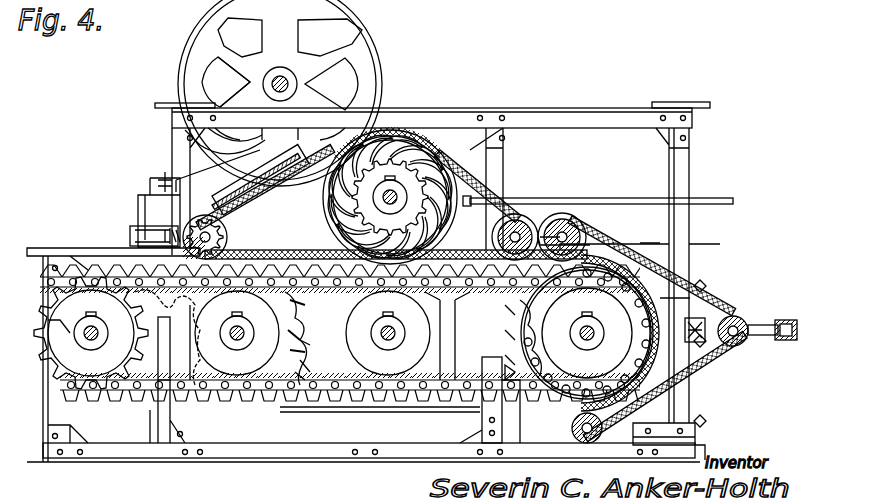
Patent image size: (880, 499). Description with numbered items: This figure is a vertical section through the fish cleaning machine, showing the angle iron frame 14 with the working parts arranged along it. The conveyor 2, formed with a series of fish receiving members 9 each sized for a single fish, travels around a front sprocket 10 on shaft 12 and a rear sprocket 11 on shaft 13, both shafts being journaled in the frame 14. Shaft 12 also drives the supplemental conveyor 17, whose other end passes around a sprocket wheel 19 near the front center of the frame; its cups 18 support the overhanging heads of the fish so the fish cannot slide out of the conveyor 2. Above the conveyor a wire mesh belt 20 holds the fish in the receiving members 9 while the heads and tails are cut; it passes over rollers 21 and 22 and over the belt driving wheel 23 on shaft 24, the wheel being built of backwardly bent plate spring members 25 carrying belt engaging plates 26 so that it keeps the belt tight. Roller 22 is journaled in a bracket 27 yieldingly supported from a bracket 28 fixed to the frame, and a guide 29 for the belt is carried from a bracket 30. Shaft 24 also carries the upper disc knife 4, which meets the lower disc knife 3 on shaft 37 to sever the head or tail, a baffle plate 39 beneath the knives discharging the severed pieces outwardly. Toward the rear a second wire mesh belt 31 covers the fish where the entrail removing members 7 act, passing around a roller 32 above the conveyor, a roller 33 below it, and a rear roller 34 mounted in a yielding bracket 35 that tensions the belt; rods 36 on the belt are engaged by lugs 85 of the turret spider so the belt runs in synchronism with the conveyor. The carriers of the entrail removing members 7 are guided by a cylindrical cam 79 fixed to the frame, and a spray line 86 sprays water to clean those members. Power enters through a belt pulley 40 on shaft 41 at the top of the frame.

The conveyor 2 is at (298, 402).
The disc knife 3 is at (452, 353).
The disc knife 4 is at (416, 162).
The entrail removing members 7 is at (612, 267).
The fish receiving or holding members 9 is at (125, 270).
The sprocket 10 is at (118, 368).
The sprocket 11 is at (540, 385).
The shaft 12 is at (88, 338).
The shaft 13 is at (590, 333).
The frame 14 is at (640, 108).
The supplemental conveyor 17 is at (320, 349).
The holding members or cups 18 is at (305, 322).
The sprocket wheel 19 is at (210, 365).
The belt 20 is at (318, 270).
The roller 21 is at (518, 222).
The roller 22 is at (172, 170).
The belt driving wheel 23 is at (402, 148).
The shaft 24 is at (420, 172).
The plate spring members 25 is at (340, 210).
The belt engaging plates 26 is at (440, 186).
The bracket 27 is at (150, 215).
The bracket 28 is at (132, 228).
The guide 29 is at (250, 168).
The bracket 30 is at (190, 168).
The fish holding belt 31 is at (690, 294).
The roller 32 is at (566, 224).
The roller 33 is at (578, 436).
The rear roller 34 is at (726, 350).
The bracket 35 is at (758, 325).
The rods 36 is at (677, 275).
The shaft 37 is at (398, 332).
The baffle plate 39 is at (343, 408).
The belt pulley 40 is at (372, 56).
The shaft 41 is at (300, 84).
The cylindrical cam 79 is at (507, 378).
The lugs 85 is at (585, 333).
The spray line 86 is at (710, 199).